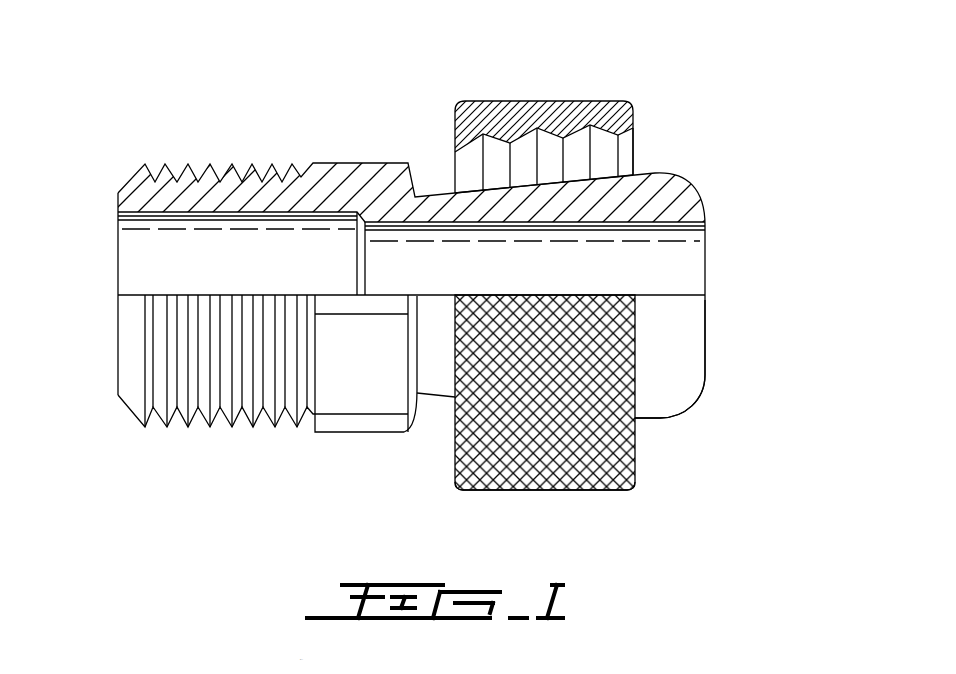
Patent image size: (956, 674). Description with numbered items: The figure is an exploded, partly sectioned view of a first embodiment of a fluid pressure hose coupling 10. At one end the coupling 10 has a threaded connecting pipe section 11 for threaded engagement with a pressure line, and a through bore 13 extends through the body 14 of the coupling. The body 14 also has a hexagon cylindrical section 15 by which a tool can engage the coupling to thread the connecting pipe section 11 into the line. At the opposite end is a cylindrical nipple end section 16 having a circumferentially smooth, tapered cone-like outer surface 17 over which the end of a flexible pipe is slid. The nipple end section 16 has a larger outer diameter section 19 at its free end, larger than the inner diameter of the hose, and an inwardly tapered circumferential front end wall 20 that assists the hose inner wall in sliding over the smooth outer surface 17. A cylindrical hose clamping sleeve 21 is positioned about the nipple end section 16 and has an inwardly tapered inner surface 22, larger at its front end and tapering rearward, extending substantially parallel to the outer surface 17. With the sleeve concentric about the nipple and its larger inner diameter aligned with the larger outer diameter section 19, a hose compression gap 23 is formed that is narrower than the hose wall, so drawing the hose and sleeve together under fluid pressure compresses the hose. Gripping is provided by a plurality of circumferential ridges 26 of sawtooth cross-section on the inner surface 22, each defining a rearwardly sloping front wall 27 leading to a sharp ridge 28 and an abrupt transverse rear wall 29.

The fluid pressure hose coupling 10 is at (188, 143).
The threaded connecting pipe section 11 is at (162, 387).
The through bore 13 is at (288, 253).
The body 14 is at (333, 388).
The hexagon cylindrical section 15 is at (363, 402).
The cylindrical nipple end section 16 is at (665, 330).
The tapered cone-like outer surface 17 is at (524, 185).
The larger outer diameter section 19 is at (675, 415).
The inwardly tapered circumferential front end wall 20 is at (705, 378).
The cylindrical hose clamping sleeve 21 is at (605, 490).
The inwardly tapered inner surface 22 is at (503, 165).
The hose compression gap 23 is at (625, 142).
The circumferential ridges 26 is at (543, 128).
The rearwardly sloping front wall 27 is at (603, 165).
The sharp ridge 28 is at (630, 128).
The abrupt transverse rear wall 29 is at (583, 122).